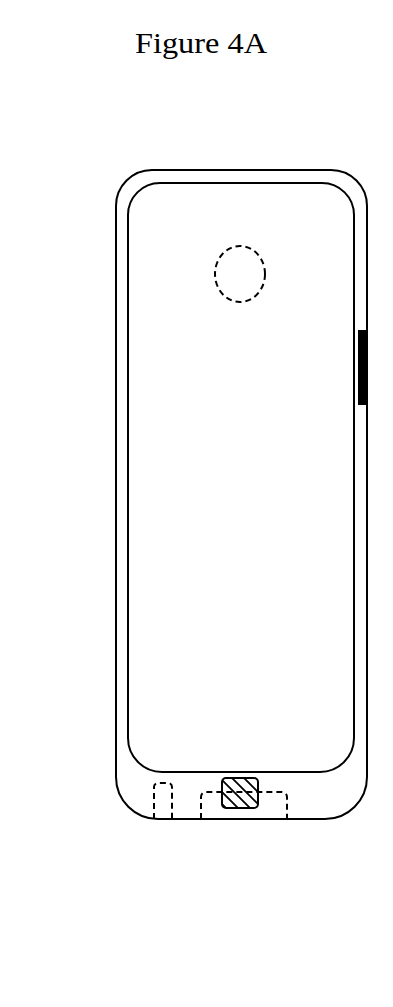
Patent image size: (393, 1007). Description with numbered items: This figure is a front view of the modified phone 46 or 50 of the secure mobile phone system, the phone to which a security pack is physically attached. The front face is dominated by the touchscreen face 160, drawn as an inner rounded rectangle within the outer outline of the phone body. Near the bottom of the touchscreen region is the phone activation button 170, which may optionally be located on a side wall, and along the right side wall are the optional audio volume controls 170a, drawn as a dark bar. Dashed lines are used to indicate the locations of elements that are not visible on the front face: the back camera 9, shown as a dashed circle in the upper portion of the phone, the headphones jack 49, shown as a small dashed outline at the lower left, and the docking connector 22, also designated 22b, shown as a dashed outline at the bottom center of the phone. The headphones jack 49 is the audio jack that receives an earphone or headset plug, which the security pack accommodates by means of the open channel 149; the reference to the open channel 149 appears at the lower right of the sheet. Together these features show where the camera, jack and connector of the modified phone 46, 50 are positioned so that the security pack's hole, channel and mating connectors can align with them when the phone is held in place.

The modified phone 46 is at (197, 494).
The modified phone 50 is at (119, 188).
The touchscreen face 160 is at (258, 607).
The back camera 9 is at (247, 286).
The audio volume controls 170a is at (358, 370).
The phone activation button 170 is at (247, 772).
The headphones jack 49 is at (154, 808).
The docking connector 22 is at (288, 824).
The docking connector 22b is at (288, 800).
The open channel 149 is at (377, 889).